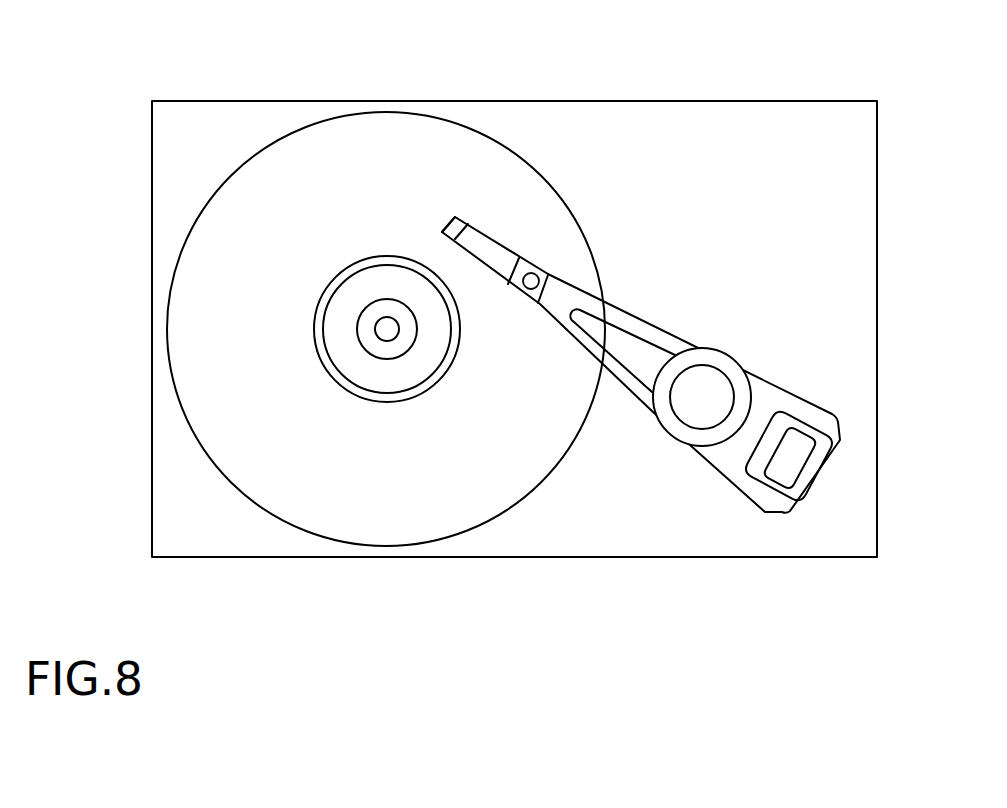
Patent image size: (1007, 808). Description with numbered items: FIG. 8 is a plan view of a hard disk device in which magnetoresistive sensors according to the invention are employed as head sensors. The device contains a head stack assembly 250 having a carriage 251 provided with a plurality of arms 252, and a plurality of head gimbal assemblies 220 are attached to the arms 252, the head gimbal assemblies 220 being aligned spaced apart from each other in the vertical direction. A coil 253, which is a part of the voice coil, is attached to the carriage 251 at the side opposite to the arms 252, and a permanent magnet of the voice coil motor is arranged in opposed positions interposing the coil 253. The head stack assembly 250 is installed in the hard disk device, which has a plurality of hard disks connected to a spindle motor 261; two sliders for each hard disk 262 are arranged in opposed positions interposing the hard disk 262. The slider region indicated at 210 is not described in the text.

The magnetic head slider 210 is at (468, 248).
The head gimbal assembly 220 is at (503, 279).
The head stack assembly 250 is at (707, 472).
The carriage 251 is at (711, 348).
The arm 252 is at (630, 404).
The coil 253 is at (818, 473).
The spindle motor 261 is at (389, 341).
The hard disk 262 is at (308, 534).